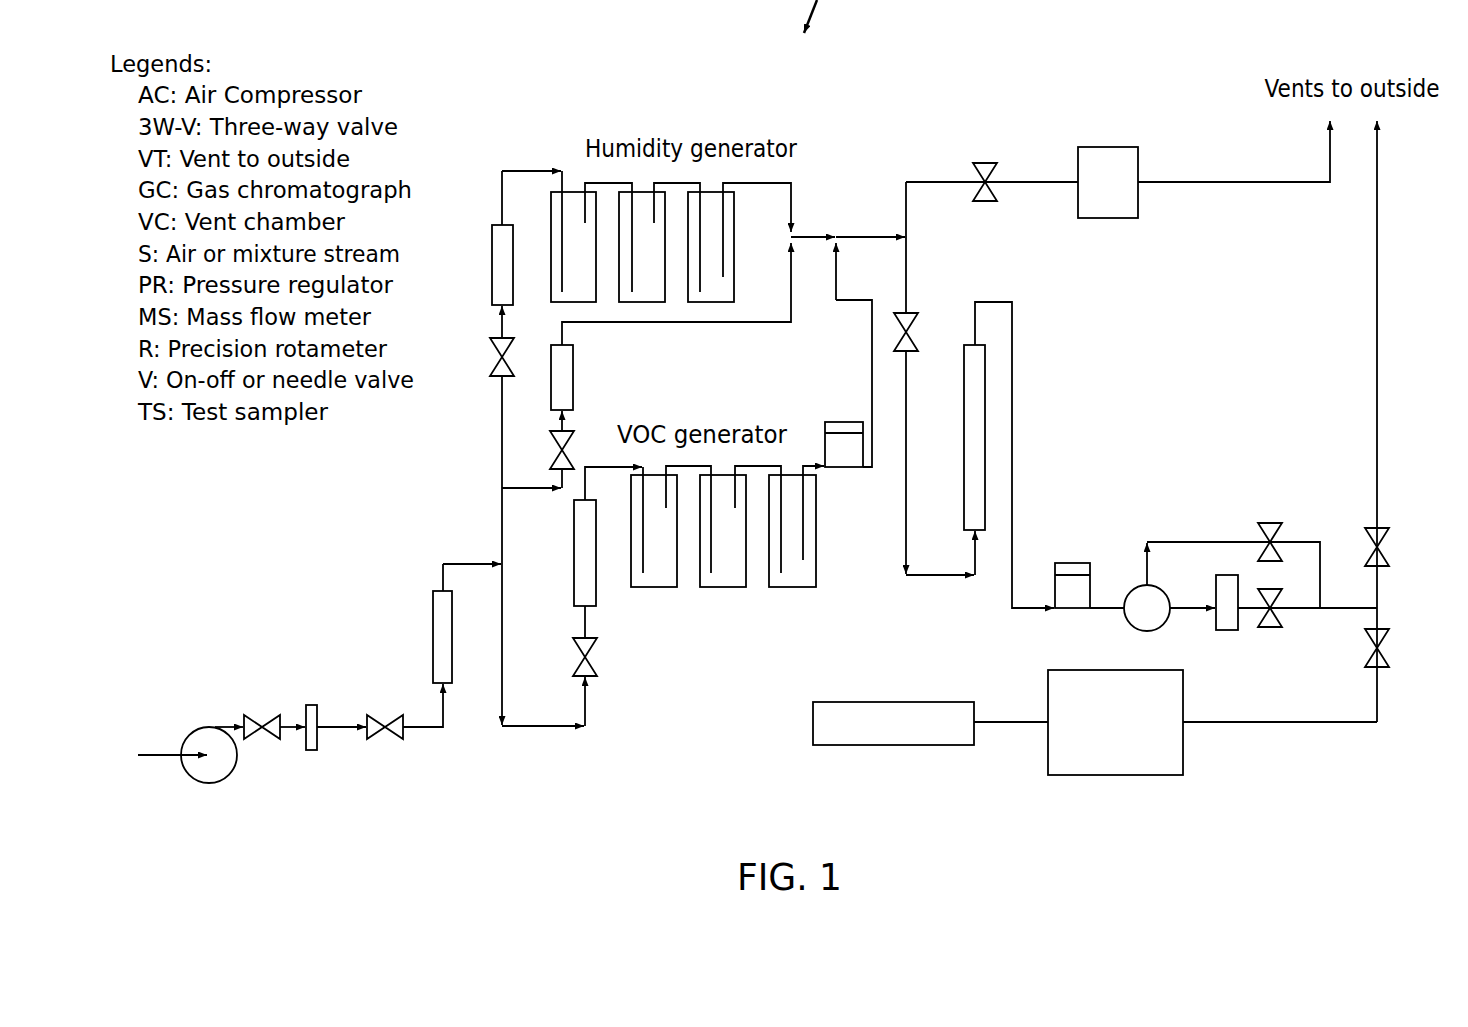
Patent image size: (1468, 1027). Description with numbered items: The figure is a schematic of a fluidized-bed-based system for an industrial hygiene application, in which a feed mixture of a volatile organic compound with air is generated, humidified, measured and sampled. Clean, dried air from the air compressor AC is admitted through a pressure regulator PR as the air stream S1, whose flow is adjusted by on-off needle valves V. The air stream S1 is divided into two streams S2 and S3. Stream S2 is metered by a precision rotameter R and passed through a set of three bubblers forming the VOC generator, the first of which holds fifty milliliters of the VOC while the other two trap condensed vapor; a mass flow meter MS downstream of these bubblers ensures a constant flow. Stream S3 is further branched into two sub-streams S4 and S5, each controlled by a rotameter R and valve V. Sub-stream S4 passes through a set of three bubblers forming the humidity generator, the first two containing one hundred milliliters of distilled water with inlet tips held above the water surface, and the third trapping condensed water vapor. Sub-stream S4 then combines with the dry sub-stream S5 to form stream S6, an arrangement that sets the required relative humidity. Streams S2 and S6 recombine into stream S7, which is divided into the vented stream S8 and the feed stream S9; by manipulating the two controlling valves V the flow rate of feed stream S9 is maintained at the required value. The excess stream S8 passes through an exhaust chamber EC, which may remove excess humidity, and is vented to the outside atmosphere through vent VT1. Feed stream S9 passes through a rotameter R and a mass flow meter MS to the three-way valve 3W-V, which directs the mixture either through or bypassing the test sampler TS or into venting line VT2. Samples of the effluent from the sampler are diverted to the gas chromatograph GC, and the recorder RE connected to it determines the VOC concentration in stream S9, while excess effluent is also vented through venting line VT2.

The air compressor AC is at (187, 774).
The pressure regulator PR is at (310, 745).
The air stream S1 is at (341, 710).
The stream S2 is at (468, 596).
The stream S3 is at (472, 538).
The sub-stream S4 is at (483, 432).
The sub-stream S5 is at (531, 472).
The stream S6 is at (813, 221).
The stream S7 is at (870, 221).
The vented stream S8 is at (927, 209).
The feed stream S9 is at (927, 275).
The precision rotameter R is at (696, 454).
The on-off needle valve V is at (828, 451).
The mass flow meter MS is at (957, 499).
The exhaust chamber EC is at (1108, 182).
The vent to outside VT1 is at (1234, 151).
The venting line VT2 is at (1407, 421).
The three-way valve 3W-V is at (1147, 624).
The test sampler TS is at (1229, 619).
The gas chromatograph GC is at (1115, 722).
The recorder RE is at (893, 723).